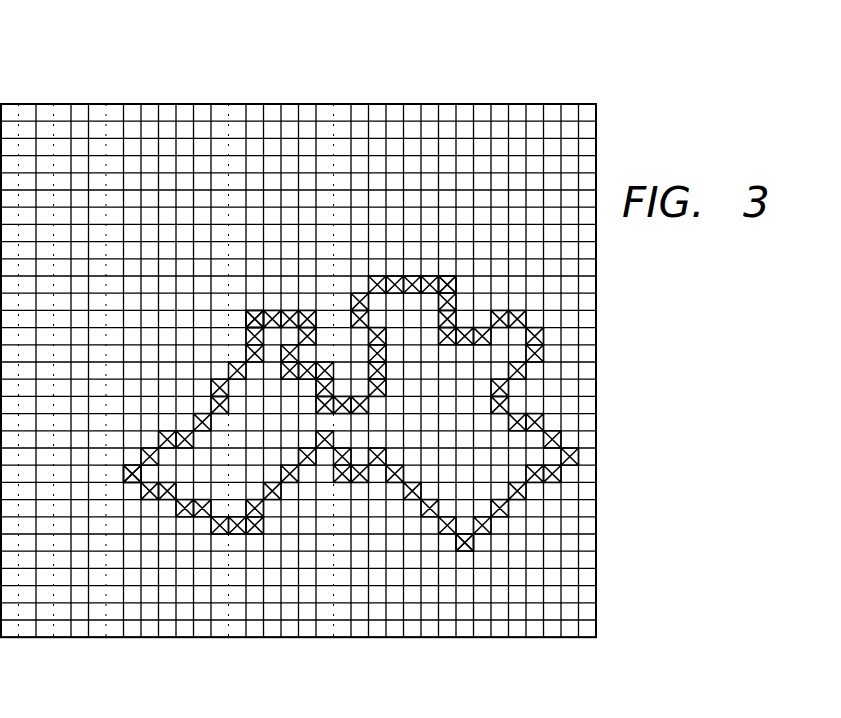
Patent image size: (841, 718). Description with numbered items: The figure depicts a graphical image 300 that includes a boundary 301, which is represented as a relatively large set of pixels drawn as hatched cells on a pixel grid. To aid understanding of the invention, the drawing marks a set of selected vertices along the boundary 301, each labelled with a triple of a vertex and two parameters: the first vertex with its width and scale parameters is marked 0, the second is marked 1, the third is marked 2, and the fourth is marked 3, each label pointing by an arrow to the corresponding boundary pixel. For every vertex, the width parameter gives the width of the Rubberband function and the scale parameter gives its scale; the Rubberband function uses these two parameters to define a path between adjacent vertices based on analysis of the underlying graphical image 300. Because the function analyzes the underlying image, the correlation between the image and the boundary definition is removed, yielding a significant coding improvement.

The graphical image 300 is at (134, 61).
The boundary 301 is at (577, 457).
The contour start pixel (V0, W0, S0) 0 is at (257, 298).
The contour pixel (V1, W1, S1) 1 is at (447, 264).
The contour pixel (V2, W2, S2) 2 is at (133, 496).
The contour pixel (V3, W3, S3) 3 is at (462, 564).